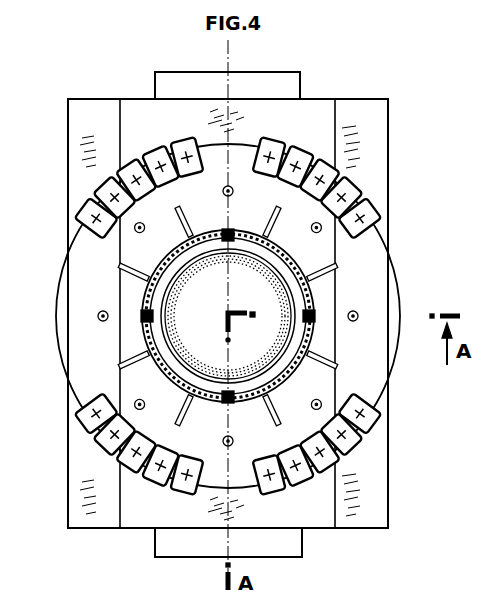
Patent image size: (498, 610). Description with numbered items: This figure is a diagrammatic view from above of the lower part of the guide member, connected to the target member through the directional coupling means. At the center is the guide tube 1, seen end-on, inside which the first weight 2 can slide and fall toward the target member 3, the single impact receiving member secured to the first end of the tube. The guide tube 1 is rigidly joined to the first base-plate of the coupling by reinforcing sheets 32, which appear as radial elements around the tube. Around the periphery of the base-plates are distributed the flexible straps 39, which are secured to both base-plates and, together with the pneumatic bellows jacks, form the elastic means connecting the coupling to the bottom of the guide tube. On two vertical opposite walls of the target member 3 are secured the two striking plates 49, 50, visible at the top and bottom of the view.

The guide tube 1 is at (143, 297).
The first weight 2 is at (177, 340).
The target member 3 is at (378, 133).
The reinforcing sheets 32 is at (336, 266).
The flexible straps 39 is at (370, 215).
The striking plate 49 is at (288, 77).
The striking plate 50 is at (297, 545).